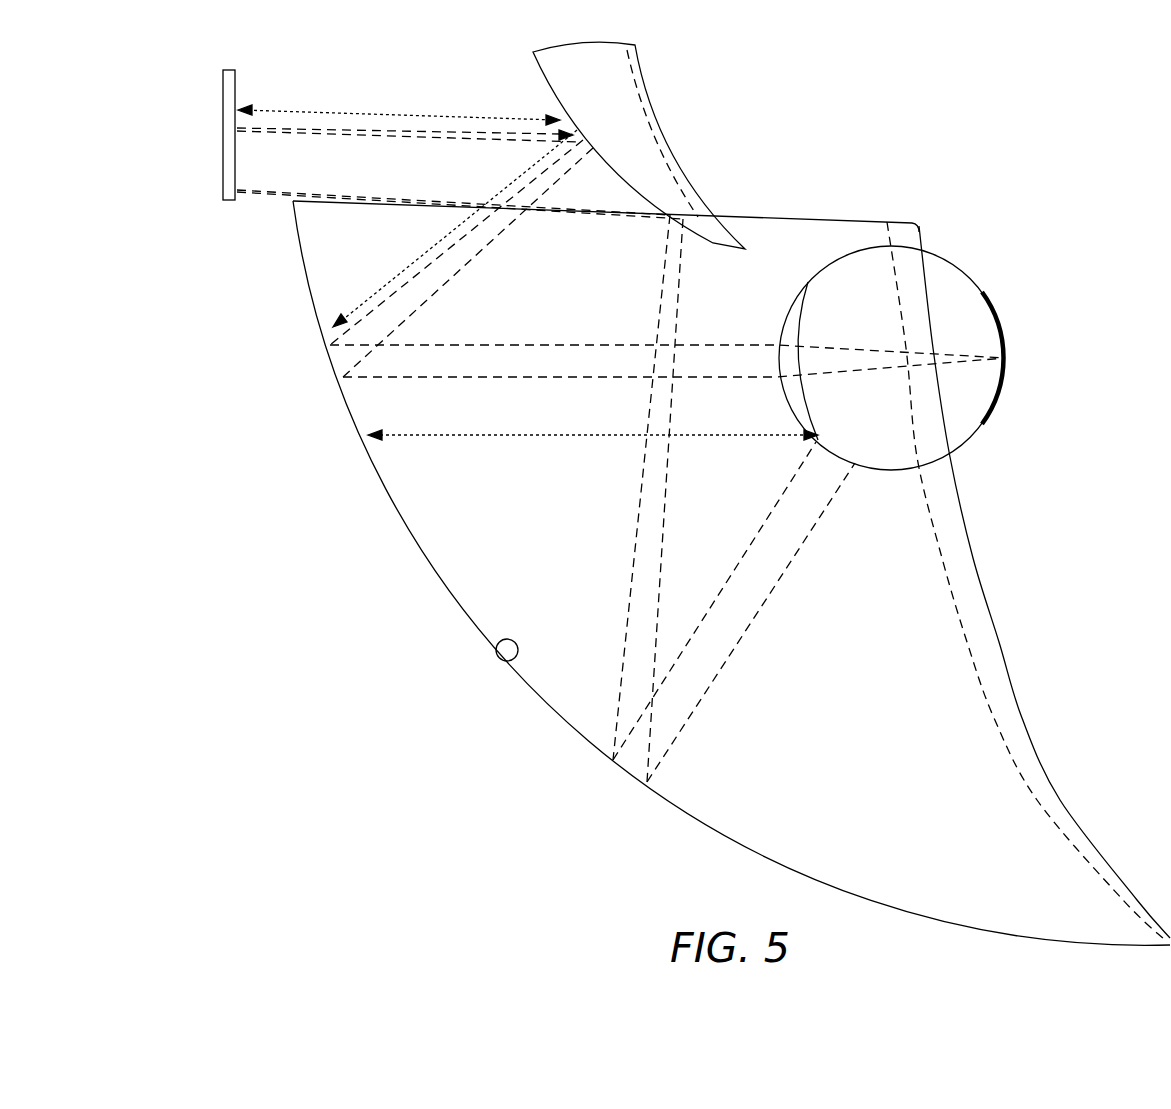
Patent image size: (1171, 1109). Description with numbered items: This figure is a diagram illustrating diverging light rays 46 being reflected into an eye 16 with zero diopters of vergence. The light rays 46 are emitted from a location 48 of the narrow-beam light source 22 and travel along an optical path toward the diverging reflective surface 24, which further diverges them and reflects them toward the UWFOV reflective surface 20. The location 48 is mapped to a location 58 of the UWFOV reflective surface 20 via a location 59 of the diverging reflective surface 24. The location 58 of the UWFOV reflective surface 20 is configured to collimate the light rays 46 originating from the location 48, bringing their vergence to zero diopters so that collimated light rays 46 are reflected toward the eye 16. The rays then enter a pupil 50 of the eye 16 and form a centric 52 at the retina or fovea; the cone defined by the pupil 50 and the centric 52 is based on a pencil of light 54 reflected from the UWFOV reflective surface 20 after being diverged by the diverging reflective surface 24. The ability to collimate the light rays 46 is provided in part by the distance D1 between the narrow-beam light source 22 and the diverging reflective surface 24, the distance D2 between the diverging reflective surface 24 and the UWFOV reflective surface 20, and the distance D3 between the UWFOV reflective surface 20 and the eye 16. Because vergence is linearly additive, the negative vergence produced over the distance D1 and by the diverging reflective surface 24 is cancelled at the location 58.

The eye 16 is at (950, 289).
The UWFOV reflective surface 20 is at (512, 657).
The narrow-beam light source 22 is at (222, 100).
The diverging reflective surface 24 is at (685, 185).
The light rays 46 is at (407, 136).
The location 48 is at (380, 128).
The pupil 50 is at (792, 315).
The centric 52 is at (1005, 358).
The pencil of light 54 is at (572, 357).
The location 58 is at (642, 362).
The location 59 is at (593, 134).
The distance D1 is at (375, 112).
The distance D2 is at (423, 253).
The distance D3 is at (569, 440).